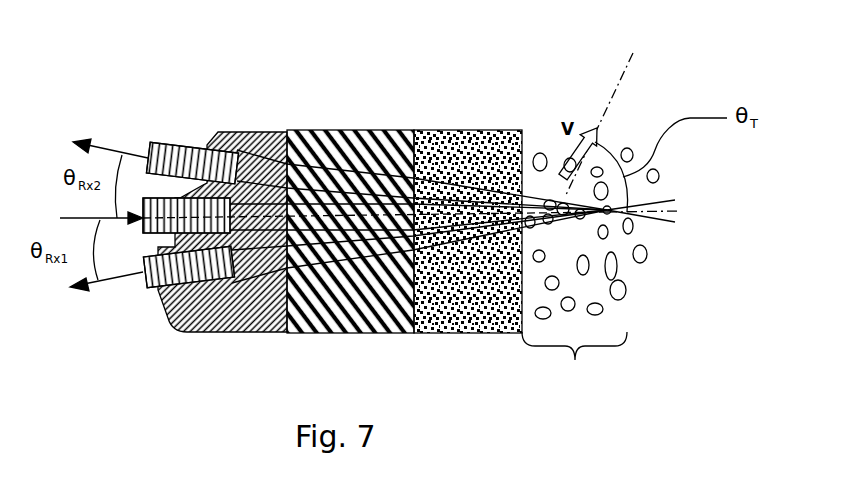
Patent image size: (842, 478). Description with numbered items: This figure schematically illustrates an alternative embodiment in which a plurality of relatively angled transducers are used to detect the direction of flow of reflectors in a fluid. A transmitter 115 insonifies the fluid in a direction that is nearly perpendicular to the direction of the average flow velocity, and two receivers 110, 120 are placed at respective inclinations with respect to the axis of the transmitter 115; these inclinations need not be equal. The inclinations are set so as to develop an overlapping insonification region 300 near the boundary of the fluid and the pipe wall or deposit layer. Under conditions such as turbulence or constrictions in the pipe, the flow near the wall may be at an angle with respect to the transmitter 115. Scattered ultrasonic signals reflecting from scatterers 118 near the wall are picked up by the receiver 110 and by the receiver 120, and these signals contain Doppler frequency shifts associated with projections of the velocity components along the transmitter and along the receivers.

The receiver 110 is at (172, 262).
The transmitter 115 is at (205, 190).
The scatterers 118 is at (627, 292).
The receiver 120 is at (203, 181).
The overlapping insonification region 300 is at (574, 364).